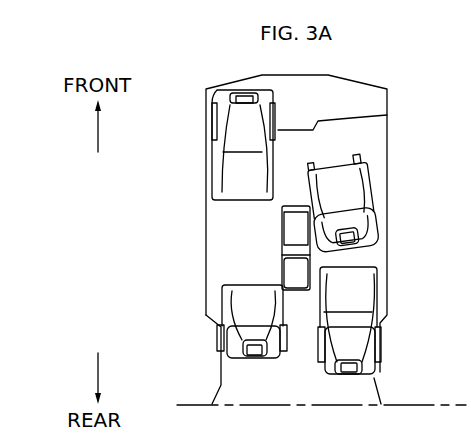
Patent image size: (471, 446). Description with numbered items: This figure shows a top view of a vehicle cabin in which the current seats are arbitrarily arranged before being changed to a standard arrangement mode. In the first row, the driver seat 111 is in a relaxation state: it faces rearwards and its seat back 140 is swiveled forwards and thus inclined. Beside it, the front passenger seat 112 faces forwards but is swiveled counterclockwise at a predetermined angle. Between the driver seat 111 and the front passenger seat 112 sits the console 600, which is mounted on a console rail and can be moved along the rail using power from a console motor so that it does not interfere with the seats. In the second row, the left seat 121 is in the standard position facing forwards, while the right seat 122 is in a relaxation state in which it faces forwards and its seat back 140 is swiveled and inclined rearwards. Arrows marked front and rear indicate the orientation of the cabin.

The driver seat 111 is at (232, 176).
The front passenger seat 112 is at (350, 187).
The left seat of the second-row seats 121 is at (247, 303).
The right seat of the second-row seats 122 is at (352, 292).
The seat back 140 is at (232, 125).
The console 600 is at (292, 252).